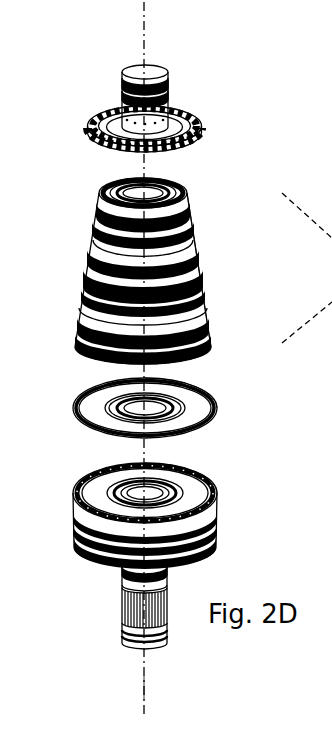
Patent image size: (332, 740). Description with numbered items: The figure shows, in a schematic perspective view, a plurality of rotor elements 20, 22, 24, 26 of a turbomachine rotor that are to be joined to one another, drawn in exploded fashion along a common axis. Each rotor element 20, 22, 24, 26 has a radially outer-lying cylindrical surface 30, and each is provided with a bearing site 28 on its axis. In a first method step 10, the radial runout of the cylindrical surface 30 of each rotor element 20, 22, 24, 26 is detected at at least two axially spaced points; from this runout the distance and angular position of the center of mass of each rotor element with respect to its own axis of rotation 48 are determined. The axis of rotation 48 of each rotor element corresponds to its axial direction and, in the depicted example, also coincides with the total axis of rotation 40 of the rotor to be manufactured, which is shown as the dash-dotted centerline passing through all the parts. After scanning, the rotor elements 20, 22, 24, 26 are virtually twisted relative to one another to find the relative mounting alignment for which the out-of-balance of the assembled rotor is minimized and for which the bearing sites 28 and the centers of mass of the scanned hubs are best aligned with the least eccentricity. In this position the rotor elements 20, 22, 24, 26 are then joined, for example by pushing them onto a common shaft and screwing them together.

The first method step 10 is at (7, 354).
The rotor element 20 is at (88, 555).
The rotor element 22 is at (73, 412).
The rotor element 24 is at (78, 306).
The rotor element 26 is at (92, 143).
The bearing site 28 is at (152, 78).
The radially outer-lying cylindrical surface 30 is at (178, 95).
The total axis of rotation 40 is at (146, 684).
The axis of rotation 48 is at (144, 690).